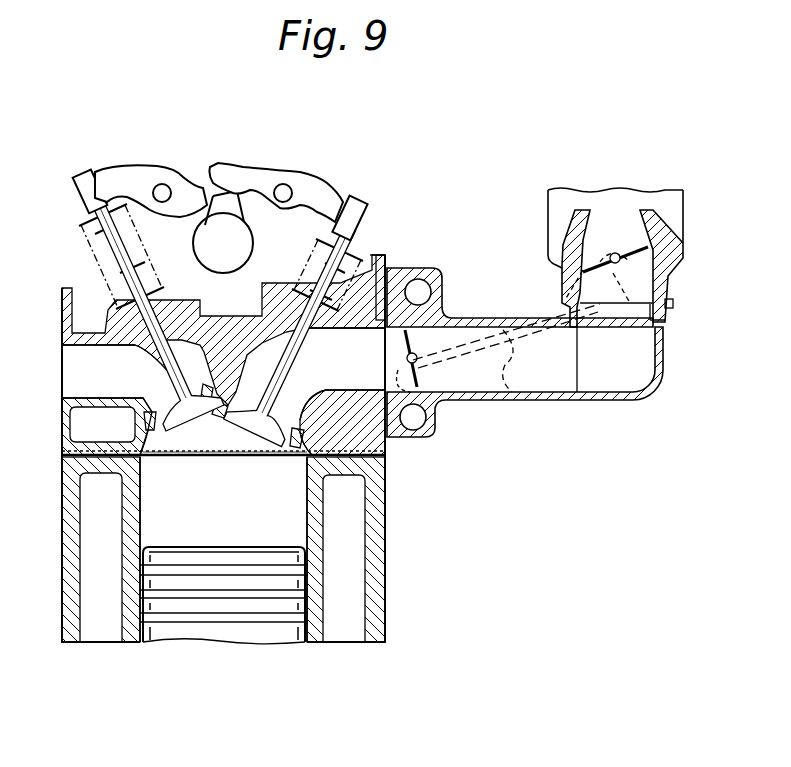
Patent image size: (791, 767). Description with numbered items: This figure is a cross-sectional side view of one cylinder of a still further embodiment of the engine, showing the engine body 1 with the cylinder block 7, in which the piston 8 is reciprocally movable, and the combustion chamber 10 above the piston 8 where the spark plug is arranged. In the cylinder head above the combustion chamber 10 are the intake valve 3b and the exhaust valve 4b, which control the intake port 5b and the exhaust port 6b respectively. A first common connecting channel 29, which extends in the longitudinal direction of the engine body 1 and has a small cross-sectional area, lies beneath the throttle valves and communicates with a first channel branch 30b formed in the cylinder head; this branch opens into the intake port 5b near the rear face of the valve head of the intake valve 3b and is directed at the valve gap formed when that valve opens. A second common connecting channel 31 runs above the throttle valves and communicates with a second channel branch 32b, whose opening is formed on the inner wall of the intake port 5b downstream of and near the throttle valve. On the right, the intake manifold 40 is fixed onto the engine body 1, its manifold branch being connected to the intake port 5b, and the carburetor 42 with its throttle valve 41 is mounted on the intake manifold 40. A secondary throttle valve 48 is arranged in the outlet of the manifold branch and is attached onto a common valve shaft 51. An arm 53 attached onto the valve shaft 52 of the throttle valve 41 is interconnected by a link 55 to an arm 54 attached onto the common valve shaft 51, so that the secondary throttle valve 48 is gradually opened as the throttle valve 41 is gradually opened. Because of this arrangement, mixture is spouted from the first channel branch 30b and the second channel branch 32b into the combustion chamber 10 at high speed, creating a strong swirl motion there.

The engine body 1 is at (386, 561).
The intake valve 3b is at (272, 325).
The exhaust valve 4b is at (166, 322).
The intake port 5b is at (358, 369).
The exhaust port 6b is at (112, 382).
The cylinder block 7 is at (318, 626).
The piston 8 is at (217, 637).
The combustion chamber 10 is at (224, 488).
The first common connecting channel 29 is at (420, 417).
The first channel branch 30b is at (300, 440).
The second common connecting channel 31 is at (420, 282).
The second channel branch 32b is at (372, 268).
The intake manifold 40 is at (591, 403).
The throttle valve 41 is at (662, 300).
The carburetor 42 is at (660, 245).
The secondary throttle valve 48 is at (412, 333).
The common valve shaft 51 is at (423, 362).
The valve shaft 52 is at (612, 255).
The arm 53 is at (656, 320).
The arm 54 is at (406, 405).
The link 55 is at (512, 395).